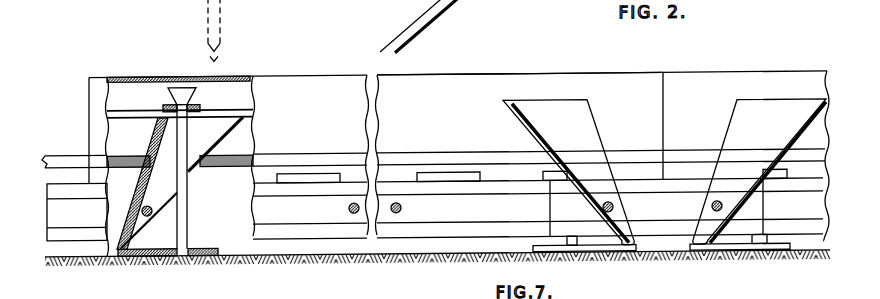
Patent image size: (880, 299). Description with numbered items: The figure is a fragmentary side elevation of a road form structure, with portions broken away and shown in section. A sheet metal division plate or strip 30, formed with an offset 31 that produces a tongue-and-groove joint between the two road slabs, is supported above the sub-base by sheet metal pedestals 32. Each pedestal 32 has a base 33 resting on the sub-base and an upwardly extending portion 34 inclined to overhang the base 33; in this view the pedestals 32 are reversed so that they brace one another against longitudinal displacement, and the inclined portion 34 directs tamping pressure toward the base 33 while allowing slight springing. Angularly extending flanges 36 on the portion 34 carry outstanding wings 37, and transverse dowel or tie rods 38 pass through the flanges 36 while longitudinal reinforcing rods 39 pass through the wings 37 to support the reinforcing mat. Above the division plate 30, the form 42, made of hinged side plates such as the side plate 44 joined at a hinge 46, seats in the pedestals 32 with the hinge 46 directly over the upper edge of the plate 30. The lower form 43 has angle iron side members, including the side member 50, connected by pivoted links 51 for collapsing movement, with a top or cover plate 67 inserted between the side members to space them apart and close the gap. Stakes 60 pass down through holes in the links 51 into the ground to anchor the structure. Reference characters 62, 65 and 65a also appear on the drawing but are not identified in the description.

In FIG. 2, the division plate 30 is at (392, 228).
In FIG. 2, the offset 31 is at (538, 193).
In FIG. 2, the pedestal 32 is at (606, 133).
In FIG. 2, the base 33 is at (208, 248).
In FIG. 2, the upwardly extending portion 34 is at (136, 207).
In FIG. 2, the flange 36 is at (204, 135).
In FIG. 2, the wing 37 is at (518, 120).
In FIG. 2, the transverse dowel rod 38 is at (151, 257).
In FIG. 2, the longitudinal reinforcing rod 39 is at (410, 154).
In FIG. 2, the form 42 is at (467, 72).
In FIG. 2, the form 43 is at (139, 92).
In FIG. 2, the side plate 44 is at (412, 95).
In FIG. 2, the hinge 46 is at (317, 174).
In FIG. 2, the side member 50 is at (238, 113).
In FIG. 2, the link 51 is at (193, 105).
In FIG. 2, the stake 60 is at (184, 213).
In FIG. 7, the member 62 is at (780, 288).
In FIG. 2, the screwdriver 65 is at (230, 30).
In FIG. 7, the member 65a is at (678, 287).
In FIG. 2, the cover plate 67 is at (172, 77).